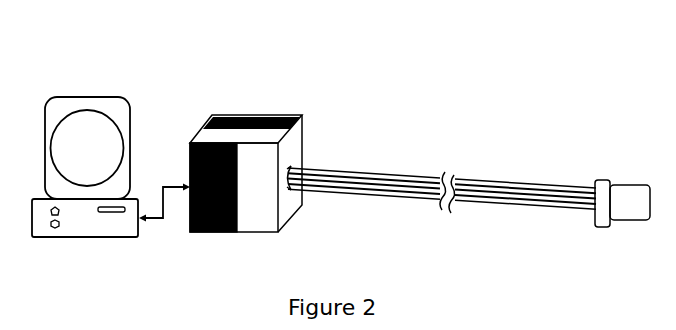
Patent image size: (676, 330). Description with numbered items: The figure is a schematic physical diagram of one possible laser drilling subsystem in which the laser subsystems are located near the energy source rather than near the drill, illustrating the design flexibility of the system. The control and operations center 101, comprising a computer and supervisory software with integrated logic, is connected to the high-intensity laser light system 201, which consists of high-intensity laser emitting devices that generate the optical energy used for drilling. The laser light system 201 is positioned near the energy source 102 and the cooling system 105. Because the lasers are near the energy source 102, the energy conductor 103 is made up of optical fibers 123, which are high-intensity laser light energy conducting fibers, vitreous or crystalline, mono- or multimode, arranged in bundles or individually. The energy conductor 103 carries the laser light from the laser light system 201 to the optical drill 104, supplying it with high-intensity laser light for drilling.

The control and operations center 101 is at (44, 95).
The cooling system 105 is at (184, 160).
The high-intensity laser light system 201 is at (242, 108).
The energy source 102 is at (296, 135).
The energy conductor 103 is at (495, 173).
The optical drill 104 is at (625, 174).
The optical fibers 123 is at (558, 214).